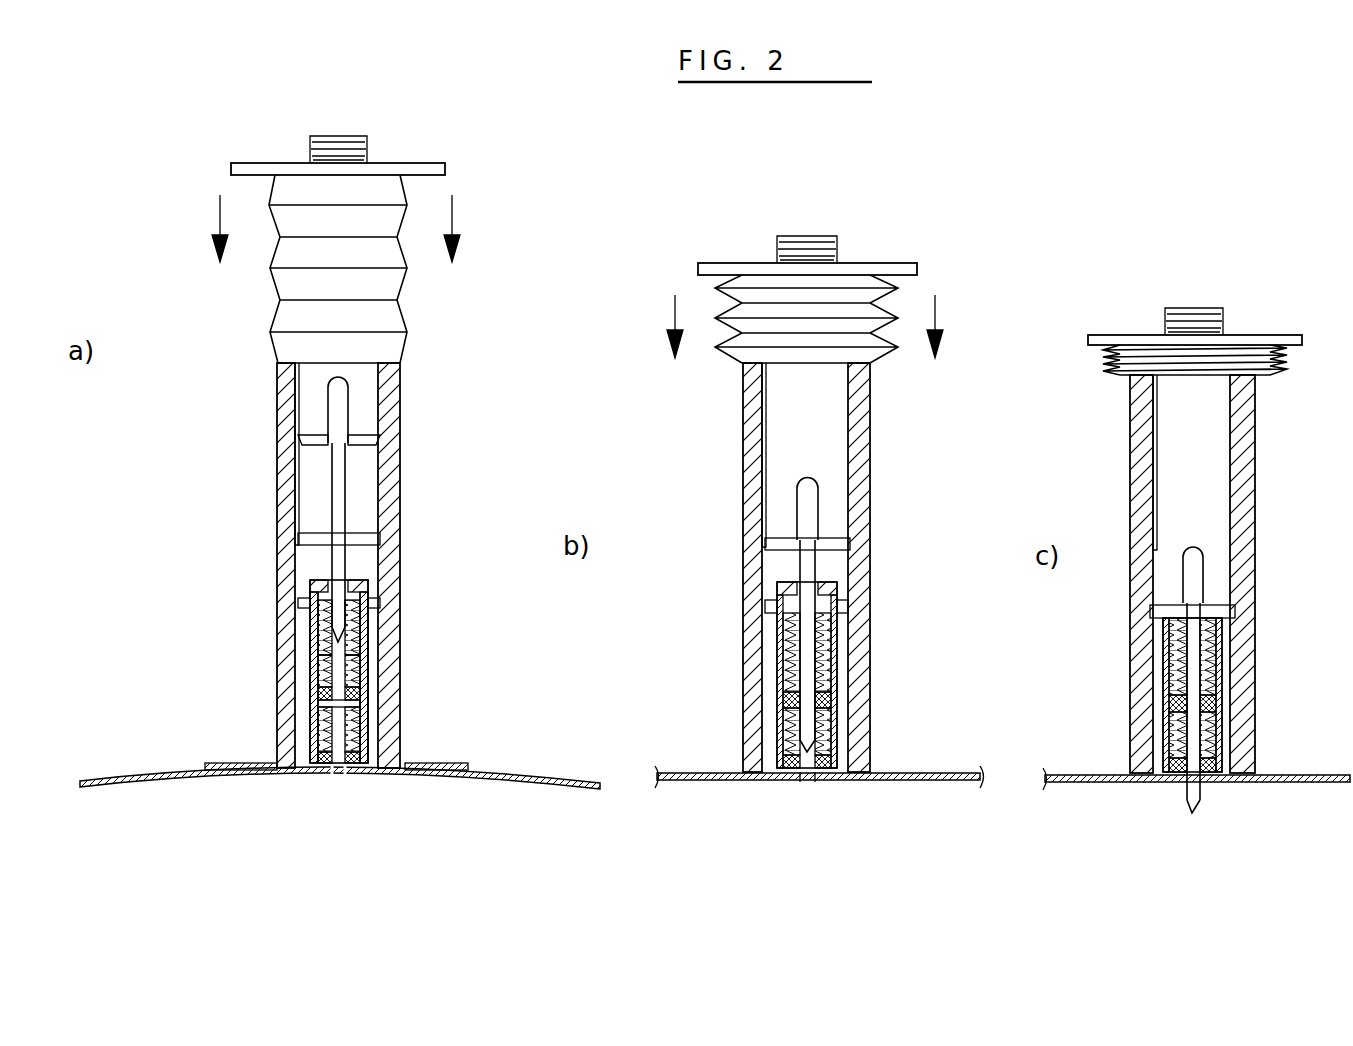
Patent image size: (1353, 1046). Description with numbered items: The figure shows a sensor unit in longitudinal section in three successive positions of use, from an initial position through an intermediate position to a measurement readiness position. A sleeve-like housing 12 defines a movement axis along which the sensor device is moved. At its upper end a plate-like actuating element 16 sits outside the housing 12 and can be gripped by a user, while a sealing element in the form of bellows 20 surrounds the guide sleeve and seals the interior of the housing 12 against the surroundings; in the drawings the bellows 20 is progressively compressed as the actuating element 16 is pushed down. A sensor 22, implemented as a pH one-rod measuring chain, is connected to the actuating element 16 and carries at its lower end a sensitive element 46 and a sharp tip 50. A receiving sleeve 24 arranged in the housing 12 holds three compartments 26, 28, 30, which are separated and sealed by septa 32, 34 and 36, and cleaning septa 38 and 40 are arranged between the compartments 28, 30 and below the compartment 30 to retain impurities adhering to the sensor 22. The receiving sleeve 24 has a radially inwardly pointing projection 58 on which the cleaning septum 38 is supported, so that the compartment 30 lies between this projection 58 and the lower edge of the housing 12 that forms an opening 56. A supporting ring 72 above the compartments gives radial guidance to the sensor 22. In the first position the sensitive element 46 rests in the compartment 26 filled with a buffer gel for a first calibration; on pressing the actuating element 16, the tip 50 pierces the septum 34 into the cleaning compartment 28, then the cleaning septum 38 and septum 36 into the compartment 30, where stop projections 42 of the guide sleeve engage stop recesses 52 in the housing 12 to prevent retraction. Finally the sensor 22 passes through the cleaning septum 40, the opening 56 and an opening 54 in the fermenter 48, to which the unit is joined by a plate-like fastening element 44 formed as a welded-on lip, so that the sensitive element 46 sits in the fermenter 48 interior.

The housing 12 is at (395, 490).
The actuating element 16 is at (410, 165).
The bellows 20 is at (290, 280).
The sensor 22 is at (345, 565).
The receiving sleeve 24 is at (318, 630).
The first compartment 26 is at (352, 625).
The second compartment 28 is at (327, 670).
The third compartment 30 is at (340, 740).
The septum 32 is at (360, 598).
The septum 34 is at (350, 655).
The septum 36 is at (350, 698).
The cleaning septum 38 is at (330, 700).
The cleaning septum 40 is at (325, 770).
The stop projections 42 is at (312, 445).
The fastening element 44 is at (455, 768).
The sensitive element 46 is at (325, 625).
The fermenter 48 is at (515, 785).
The tip 50 is at (325, 662).
The stop recesses 52 is at (380, 440).
The opening 54 is at (807, 781).
The opening 56 is at (810, 770).
The projection 58 is at (830, 700).
The supporting ring 72 is at (320, 582).